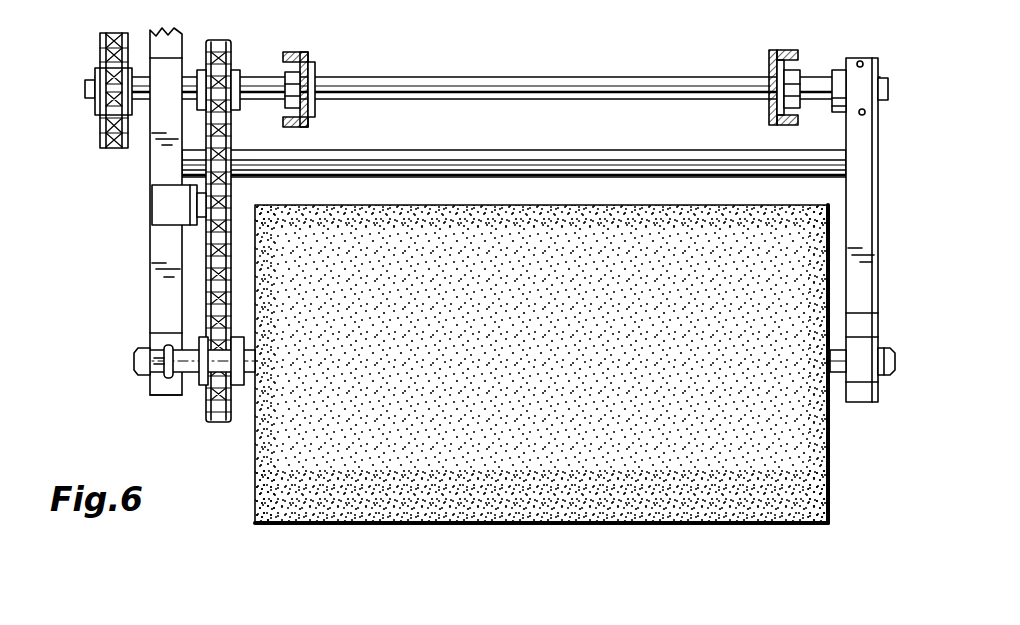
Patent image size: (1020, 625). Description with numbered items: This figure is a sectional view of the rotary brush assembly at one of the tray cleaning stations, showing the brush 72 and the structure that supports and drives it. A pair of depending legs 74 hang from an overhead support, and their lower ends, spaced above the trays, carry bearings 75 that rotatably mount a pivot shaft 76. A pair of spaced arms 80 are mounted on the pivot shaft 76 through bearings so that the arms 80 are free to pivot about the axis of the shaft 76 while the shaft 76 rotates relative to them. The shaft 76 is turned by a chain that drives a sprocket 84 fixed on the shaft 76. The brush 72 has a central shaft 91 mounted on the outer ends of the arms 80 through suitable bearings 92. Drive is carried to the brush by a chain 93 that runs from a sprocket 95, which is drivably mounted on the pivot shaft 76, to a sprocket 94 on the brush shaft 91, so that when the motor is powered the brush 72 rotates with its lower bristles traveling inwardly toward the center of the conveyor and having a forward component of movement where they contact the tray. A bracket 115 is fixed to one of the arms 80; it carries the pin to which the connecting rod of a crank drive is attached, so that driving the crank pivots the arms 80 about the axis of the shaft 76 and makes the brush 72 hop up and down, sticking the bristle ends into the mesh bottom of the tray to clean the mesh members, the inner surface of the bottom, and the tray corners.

The rotary brush 72 is at (545, 212).
The depending legs 74 is at (314, 65).
The bearings 75 is at (296, 56).
The pivot shaft 76 is at (523, 75).
The spaced arms 80 is at (158, 134).
The sprocket 84 is at (136, 61).
The central shaft 91 is at (252, 362).
The bearings 92 is at (168, 349).
The chain 93 is at (232, 196).
The sprocket 94 is at (240, 389).
The sprocket 95 is at (236, 73).
The bracket 115 is at (160, 199).